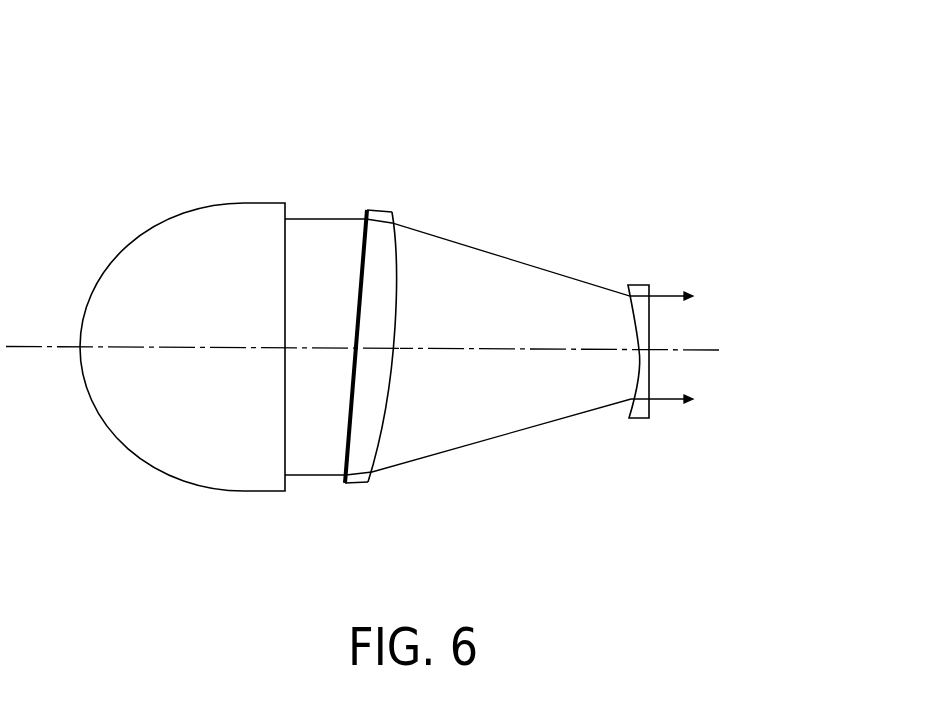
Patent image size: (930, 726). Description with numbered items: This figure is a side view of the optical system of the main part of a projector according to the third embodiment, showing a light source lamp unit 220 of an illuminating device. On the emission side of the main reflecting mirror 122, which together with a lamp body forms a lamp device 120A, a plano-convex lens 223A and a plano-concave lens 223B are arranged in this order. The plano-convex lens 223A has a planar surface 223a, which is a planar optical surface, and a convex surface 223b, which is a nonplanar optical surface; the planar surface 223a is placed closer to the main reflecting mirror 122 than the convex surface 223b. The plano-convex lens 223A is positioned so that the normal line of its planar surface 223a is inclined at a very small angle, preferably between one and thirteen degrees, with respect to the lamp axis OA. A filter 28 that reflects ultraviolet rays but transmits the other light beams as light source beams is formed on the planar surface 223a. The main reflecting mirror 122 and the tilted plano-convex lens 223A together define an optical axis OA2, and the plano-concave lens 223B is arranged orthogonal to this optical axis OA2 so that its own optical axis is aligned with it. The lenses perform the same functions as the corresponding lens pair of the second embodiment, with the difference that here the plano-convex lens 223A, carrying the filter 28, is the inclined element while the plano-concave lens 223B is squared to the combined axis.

The main reflecting mirror 122 is at (182, 296).
The lamp device 120A is at (204, 209).
The light source lamp unit 220 is at (487, 319).
The plano-convex lens 223A is at (391, 347).
The planar surface 223a is at (363, 251).
The convex surface 223b is at (397, 251).
The plano-concave lens 223B is at (640, 285).
The filter 28 is at (345, 483).
The lamp axis OA is at (314, 350).
The optical axis OA2 is at (482, 353).